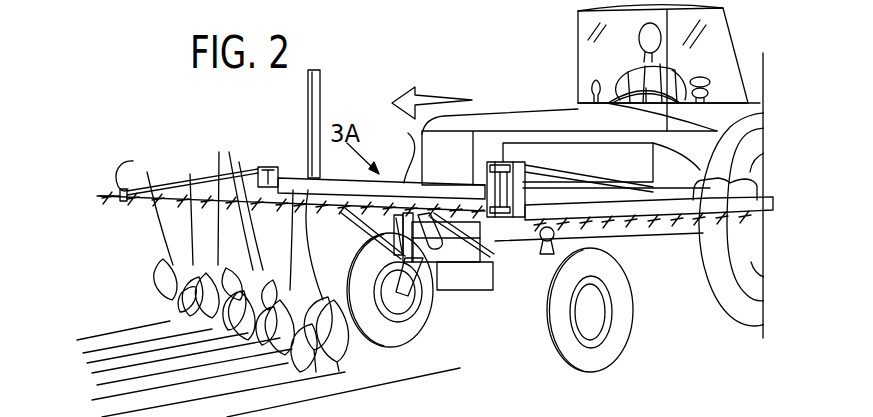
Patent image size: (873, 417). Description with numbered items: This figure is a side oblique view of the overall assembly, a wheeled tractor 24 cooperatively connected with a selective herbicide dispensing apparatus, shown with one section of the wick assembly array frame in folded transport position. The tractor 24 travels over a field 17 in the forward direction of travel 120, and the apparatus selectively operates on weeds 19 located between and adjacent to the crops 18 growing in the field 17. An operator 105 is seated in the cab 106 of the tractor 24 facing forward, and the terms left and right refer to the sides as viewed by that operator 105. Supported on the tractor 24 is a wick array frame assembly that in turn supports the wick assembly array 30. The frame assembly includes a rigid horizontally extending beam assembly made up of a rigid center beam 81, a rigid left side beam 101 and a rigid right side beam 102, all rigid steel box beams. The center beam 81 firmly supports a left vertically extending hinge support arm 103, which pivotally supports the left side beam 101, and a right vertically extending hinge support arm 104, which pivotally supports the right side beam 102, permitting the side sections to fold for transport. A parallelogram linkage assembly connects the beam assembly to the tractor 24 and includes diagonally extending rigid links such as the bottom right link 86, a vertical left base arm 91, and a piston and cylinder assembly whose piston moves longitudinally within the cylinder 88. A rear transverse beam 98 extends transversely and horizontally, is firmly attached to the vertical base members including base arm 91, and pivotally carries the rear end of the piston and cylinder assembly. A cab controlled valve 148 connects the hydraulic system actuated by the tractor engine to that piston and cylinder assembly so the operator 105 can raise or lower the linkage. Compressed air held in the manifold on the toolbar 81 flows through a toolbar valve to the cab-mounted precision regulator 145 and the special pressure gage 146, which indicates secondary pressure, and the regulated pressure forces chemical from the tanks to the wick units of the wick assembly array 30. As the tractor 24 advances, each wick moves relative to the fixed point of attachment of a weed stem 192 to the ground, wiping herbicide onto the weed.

The field 17 is at (140, 332).
The crops 18 is at (157, 263).
The weeds 19 is at (219, 226).
The wheeled tractor 24 is at (699, 252).
The wick assembly array 30 is at (340, 335).
The rigid center beam 81 is at (401, 154).
The bottom right diagonally extending rigid link 86 is at (383, 212).
The cylinder 88 is at (440, 262).
The vertical left base arm 91 is at (507, 262).
The rear transverse beam 98 is at (424, 240).
The rigid left side beam 101 is at (606, 165).
The rigid right side beam 102 is at (291, 183).
The left vertically extending hinge support arm 103 is at (486, 183).
The right vertically extending hinge support arm 104 is at (280, 166).
The operator 105 is at (638, 63).
The cab 106 is at (577, 32).
The forward direction of travel 120 is at (444, 97).
The cab-mounted precision regulator 145 is at (707, 80).
The special pressure gage 146 is at (322, 99).
The cab controlled valve 148 is at (596, 80).
The weed stem 192 is at (330, 352).